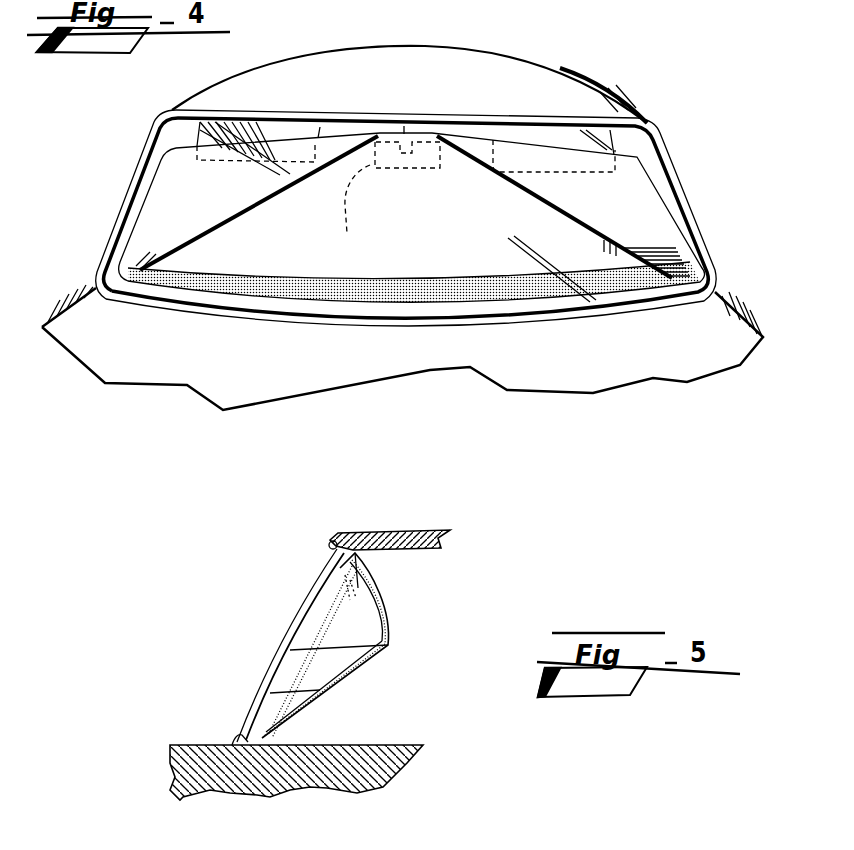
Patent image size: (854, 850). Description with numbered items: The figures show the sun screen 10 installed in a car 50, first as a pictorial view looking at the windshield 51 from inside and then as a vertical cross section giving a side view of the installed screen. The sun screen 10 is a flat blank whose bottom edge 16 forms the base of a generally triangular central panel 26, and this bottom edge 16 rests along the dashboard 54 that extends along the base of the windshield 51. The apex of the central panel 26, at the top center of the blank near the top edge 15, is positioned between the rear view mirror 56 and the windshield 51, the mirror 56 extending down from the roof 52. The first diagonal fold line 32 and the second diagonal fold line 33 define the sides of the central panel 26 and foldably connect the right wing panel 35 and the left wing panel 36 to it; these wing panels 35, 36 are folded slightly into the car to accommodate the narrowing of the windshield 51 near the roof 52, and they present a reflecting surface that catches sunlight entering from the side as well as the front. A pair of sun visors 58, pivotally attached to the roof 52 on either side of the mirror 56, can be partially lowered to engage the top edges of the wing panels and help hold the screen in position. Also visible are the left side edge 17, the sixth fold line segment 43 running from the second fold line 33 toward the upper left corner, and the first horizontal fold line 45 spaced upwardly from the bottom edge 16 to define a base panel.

In FIG. 4, the sun screen 10 is at (168, 222).
In FIG. 5, the sun screen 10 is at (410, 657).
In FIG. 5, the top edge 15 is at (375, 600).
In FIG. 4, the bottom edge 16 is at (486, 280).
In FIG. 5, the left side edge 17 is at (335, 692).
In FIG. 4, the central panel 26 is at (421, 222).
In FIG. 4, the first diagonal fold line 32 is at (235, 232).
In FIG. 4, the second diagonal fold line 33 is at (540, 207).
In FIG. 5, the second diagonal fold line 33 is at (277, 657).
In FIG. 4, the right wing panel 35 is at (224, 195).
In FIG. 4, the left wing panel 36 is at (619, 205).
In FIG. 5, the left wing panel 36 is at (372, 632).
In FIG. 5, the sixth fold line segment 43 is at (337, 648).
In FIG. 5, the first horizontal fold line 45 is at (317, 697).
In FIG. 4, the car 50 is at (643, 92).
In FIG. 5, the car 50 is at (237, 655).
In FIG. 4, the windshield 51 is at (660, 193).
In FIG. 5, the windshield 51 is at (290, 612).
In FIG. 4, the roof 52 is at (513, 67).
In FIG. 5, the roof 52 is at (392, 530).
In FIG. 4, the dashboard 54 is at (693, 272).
In FIG. 5, the dashboard 54 is at (398, 745).
In FIG. 4, the rear view mirror 56 is at (362, 211).
In FIG. 5, the rear view mirror 56 is at (328, 582).
In FIG. 4, the sun visors 58 is at (258, 136).
In FIG. 5, the sun visors 58 is at (358, 562).